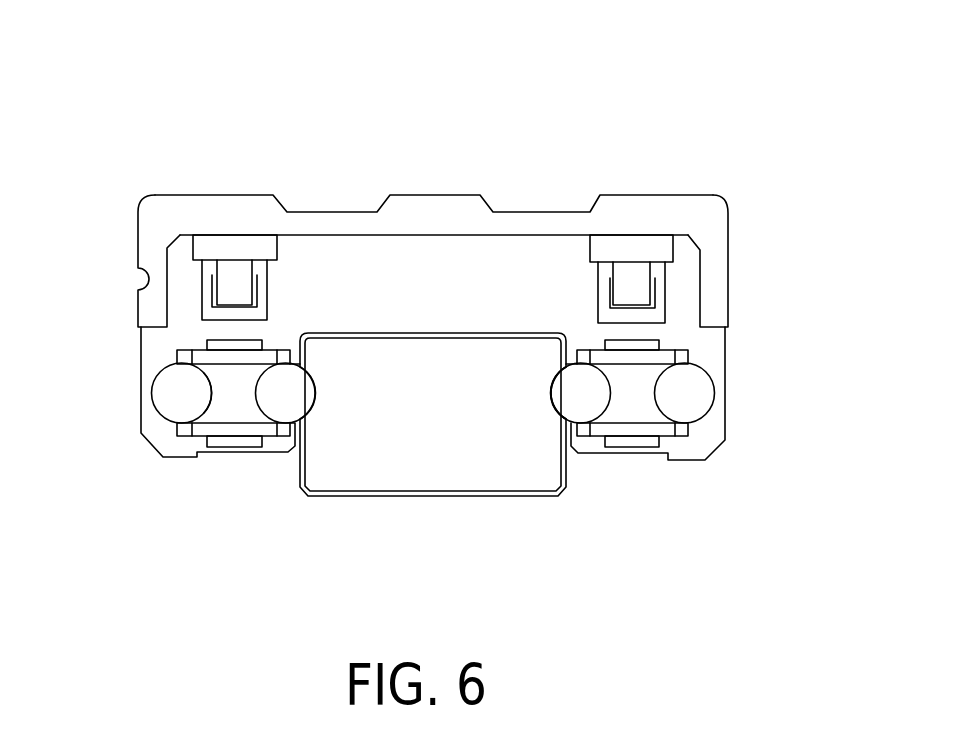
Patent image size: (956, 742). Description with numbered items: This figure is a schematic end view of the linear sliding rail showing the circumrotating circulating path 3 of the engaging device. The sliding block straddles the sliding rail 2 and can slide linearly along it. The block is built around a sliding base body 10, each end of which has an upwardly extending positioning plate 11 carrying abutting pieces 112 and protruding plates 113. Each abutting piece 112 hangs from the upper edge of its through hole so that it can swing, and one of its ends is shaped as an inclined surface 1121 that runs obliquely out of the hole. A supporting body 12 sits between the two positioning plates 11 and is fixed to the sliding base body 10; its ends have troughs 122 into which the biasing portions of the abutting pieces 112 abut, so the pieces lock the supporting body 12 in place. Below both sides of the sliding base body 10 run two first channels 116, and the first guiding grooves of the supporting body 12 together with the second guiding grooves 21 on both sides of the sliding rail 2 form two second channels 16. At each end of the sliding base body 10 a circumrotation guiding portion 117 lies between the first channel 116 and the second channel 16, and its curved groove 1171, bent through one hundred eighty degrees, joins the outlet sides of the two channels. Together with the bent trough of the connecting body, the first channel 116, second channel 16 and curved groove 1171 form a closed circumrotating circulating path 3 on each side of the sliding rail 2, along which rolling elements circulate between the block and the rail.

The sliding base body 10 is at (725, 450).
The supporting body 12 is at (192, 194).
The positioning plate 11 is at (434, 276).
The abutting piece 112 is at (612, 270).
The protruding plate 113 is at (641, 250).
The trough 122 is at (653, 287).
The inclined surface 1121 is at (637, 293).
The sliding rail 2 is at (563, 495).
The second guiding groove 21 is at (552, 393).
The circumrotating circulating path 3 is at (637, 392).
The first channel 116 is at (172, 385).
The circumrotation guiding portion 117 is at (232, 395).
The curved groove 1171 is at (212, 392).
The second channel 16 is at (288, 395).